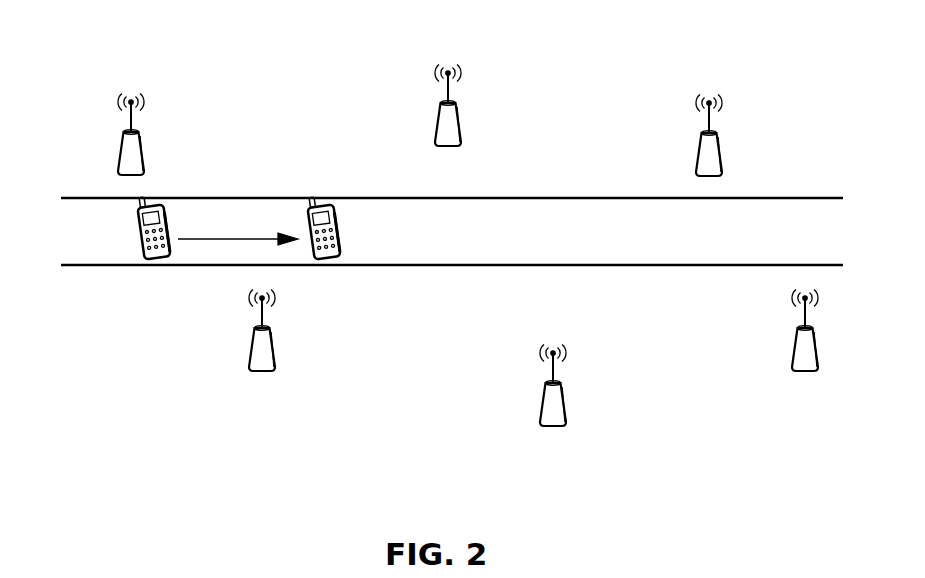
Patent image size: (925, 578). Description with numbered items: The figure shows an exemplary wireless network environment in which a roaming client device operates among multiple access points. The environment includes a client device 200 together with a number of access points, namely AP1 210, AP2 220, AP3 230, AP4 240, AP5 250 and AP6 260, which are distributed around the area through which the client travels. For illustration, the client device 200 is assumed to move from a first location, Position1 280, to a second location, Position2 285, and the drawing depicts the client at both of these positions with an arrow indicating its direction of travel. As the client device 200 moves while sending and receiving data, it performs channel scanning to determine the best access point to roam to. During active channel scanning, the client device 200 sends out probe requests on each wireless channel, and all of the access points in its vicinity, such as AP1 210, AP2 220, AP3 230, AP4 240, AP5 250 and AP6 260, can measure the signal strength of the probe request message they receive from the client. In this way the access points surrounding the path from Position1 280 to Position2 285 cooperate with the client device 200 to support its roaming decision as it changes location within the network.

The client device 200 is at (153, 308).
The access point AP1 210 is at (147, 63).
The access point AP2 220 is at (277, 424).
The access point AP3 230 is at (463, 60).
The access point AP4 240 is at (568, 477).
The access point AP5 250 is at (725, 80).
The access point AP6 260 is at (820, 424).
The first position 280 is at (103, 247).
The second position 285 is at (408, 251).